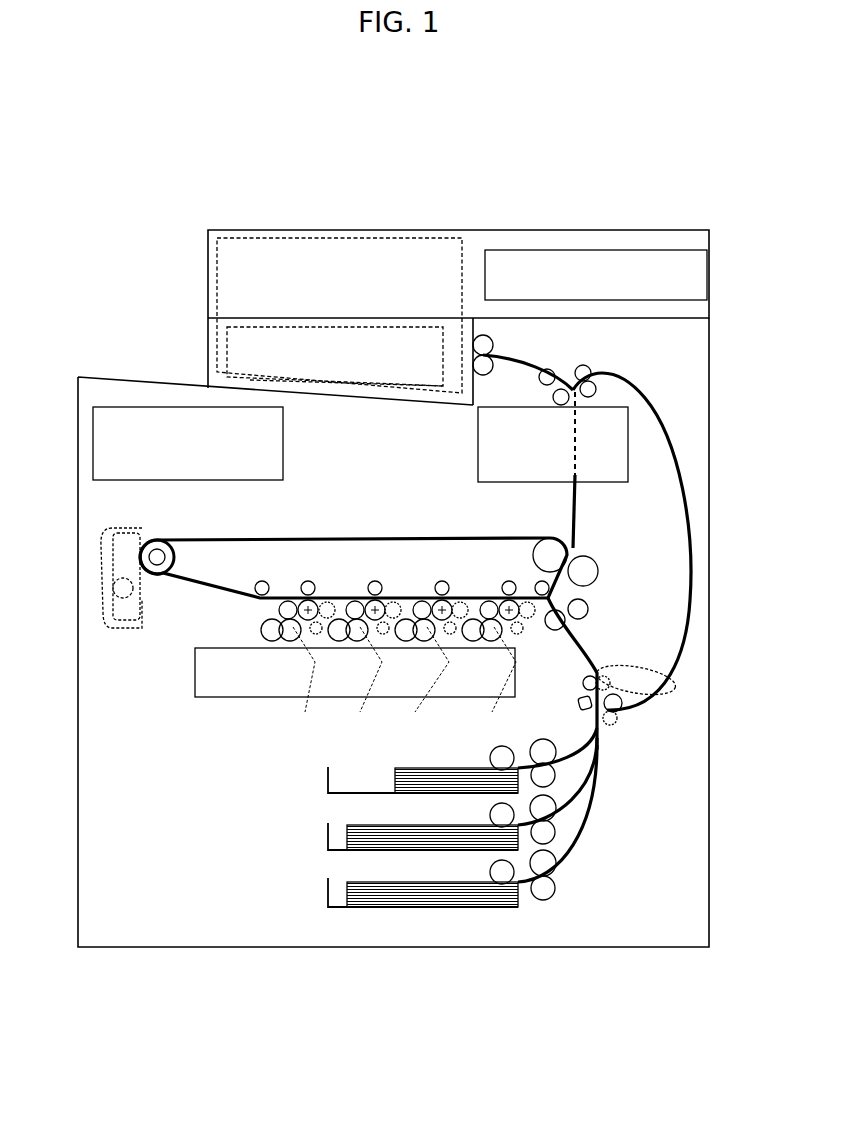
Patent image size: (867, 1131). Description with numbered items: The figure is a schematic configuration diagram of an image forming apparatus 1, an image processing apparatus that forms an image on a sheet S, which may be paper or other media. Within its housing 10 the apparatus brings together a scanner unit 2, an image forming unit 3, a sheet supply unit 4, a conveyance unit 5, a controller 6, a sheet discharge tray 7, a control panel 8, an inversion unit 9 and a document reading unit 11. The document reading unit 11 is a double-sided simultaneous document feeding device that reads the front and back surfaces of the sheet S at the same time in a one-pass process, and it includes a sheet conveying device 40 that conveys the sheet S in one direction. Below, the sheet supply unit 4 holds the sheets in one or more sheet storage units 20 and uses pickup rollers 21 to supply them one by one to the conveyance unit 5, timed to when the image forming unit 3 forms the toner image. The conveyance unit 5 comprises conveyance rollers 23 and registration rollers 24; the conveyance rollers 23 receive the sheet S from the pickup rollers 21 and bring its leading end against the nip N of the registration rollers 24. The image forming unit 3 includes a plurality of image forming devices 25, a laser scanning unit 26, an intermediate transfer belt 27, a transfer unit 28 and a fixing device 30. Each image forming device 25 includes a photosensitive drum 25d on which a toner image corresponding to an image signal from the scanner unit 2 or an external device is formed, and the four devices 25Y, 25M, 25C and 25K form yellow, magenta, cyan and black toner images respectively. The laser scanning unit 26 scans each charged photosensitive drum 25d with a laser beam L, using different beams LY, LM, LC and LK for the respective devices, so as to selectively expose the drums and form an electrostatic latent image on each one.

The image forming apparatus 1 is at (465, 182).
The scanner unit 2 is at (333, 258).
The image forming unit 3 is at (411, 632).
The sheet supply unit 4 is at (318, 817).
The conveyance unit 5 is at (659, 688).
The controller 6 is at (92, 450).
The sheet discharge tray 7 is at (252, 386).
The control panel 8 is at (582, 262).
The inversion unit 9 is at (693, 482).
The housing 10 is at (712, 872).
The document reading unit 11 is at (240, 232).
The sheet storage unit 20 is at (327, 784).
The pickup roller 21 is at (489, 758).
The conveyance roller 23 is at (660, 688).
The registration roller 24 is at (552, 612).
The image forming device 25 is at (382, 568).
The image forming device (yellow) 25Y is at (296, 591).
The image forming device (magenta) 25M is at (363, 591).
The image forming device (cyan) 25C is at (430, 591).
The image forming device (black) 25K is at (497, 591).
The photosensitive drum 25d is at (328, 600).
The laser scanning unit 26 is at (180, 693).
The intermediate transfer belt 27 is at (408, 537).
The transfer unit 28 is at (580, 558).
The fixing device 30 is at (497, 483).
The sheet conveying device 40 is at (240, 318).
The laser beam L is at (396, 684).
The laser beam (yellow) LY is at (301, 684).
The laser beam (magenta) LM is at (361, 684).
The laser beam (cyan) LC is at (421, 684).
The laser beam (black) LK is at (495, 684).
The nip N is at (580, 620).
The sheet S is at (407, 767).